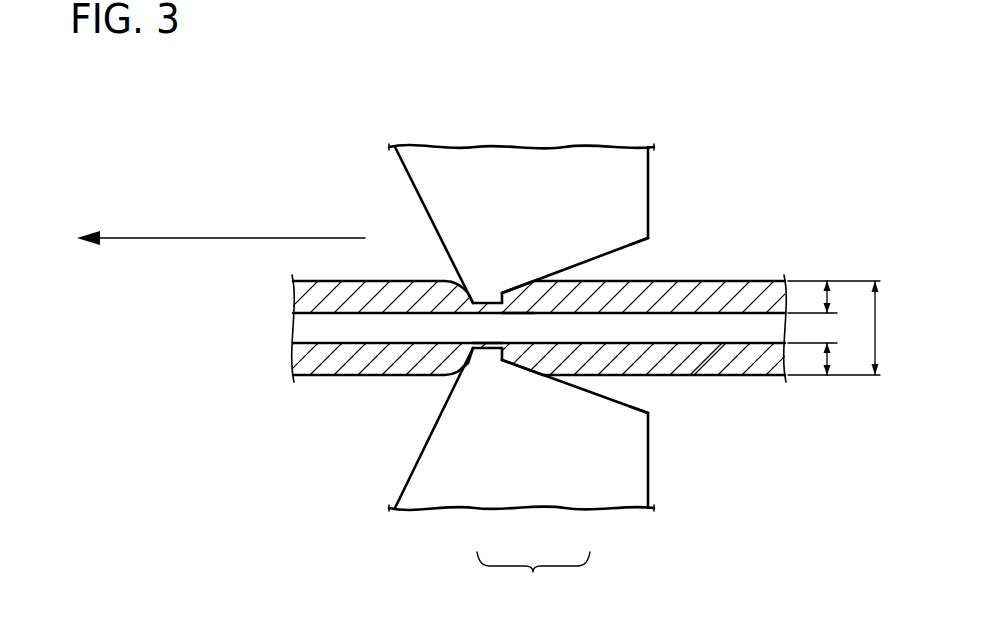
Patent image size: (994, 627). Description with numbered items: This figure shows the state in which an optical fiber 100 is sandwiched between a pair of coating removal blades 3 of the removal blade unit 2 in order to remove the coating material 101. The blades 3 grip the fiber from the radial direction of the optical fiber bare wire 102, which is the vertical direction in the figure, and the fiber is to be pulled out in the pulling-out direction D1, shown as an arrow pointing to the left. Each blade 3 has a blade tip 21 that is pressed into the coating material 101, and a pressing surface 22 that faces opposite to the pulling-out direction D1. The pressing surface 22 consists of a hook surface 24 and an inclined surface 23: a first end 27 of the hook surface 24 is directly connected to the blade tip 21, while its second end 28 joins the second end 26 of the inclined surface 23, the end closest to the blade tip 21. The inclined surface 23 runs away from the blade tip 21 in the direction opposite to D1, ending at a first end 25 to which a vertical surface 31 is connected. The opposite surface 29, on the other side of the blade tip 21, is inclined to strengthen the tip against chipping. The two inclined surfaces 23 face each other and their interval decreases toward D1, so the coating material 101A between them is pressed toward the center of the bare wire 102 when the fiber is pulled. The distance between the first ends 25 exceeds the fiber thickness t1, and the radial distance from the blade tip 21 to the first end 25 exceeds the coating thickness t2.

The removal blade unit 2 is at (669, 135).
The coating removal blade 3 is at (590, 157).
The blade tip 21 is at (485, 345).
The pressing surface 22 is at (533, 580).
The inclined surface 23 is at (603, 254).
The hook surface 24 is at (505, 294).
The first end of inclined surface 25 is at (650, 240).
The second end of inclined surface 26 is at (499, 291).
The first end of hook surface 27 is at (503, 345).
The second end of hook surface 28 is at (470, 365).
The opposite surface 29 is at (408, 177).
The vertical surface 31 is at (650, 193).
The optical fiber 100 is at (311, 389).
The coating material 101 is at (308, 294).
The coating material to be pulled out 101A is at (708, 367).
The optical fiber bare wire 102 is at (308, 328).
The pulling-out direction D1 is at (160, 238).
The thickness of optical fiber t1 is at (886, 328).
The thickness of coating material t2 is at (834, 328).